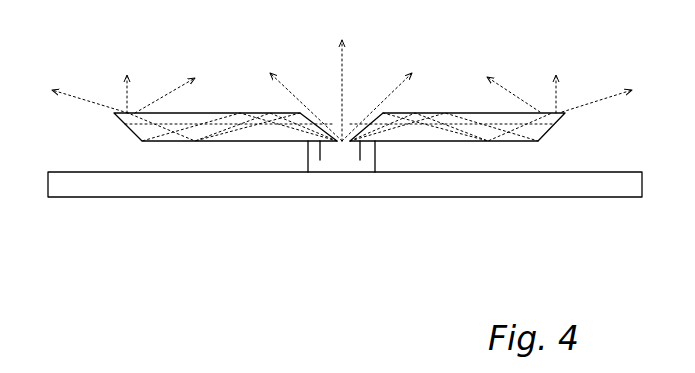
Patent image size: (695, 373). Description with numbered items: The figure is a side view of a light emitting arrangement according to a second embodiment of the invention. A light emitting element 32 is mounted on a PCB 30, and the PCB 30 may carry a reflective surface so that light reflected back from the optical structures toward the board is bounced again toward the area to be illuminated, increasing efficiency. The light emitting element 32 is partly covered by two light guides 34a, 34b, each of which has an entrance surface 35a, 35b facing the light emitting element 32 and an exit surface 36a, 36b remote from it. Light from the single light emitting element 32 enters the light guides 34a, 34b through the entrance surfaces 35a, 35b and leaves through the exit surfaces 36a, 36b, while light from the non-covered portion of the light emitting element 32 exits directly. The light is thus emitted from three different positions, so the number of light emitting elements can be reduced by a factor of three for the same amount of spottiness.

The PCB 30 is at (470, 197).
The light emitting element 32 is at (342, 157).
The light guide 34a is at (458, 113).
The light guide 34b is at (213, 113).
The entrance surface 35a is at (360, 160).
The entrance surface 35b is at (320, 160).
The exit surface 36a is at (562, 113).
The exit surface 36b is at (137, 113).